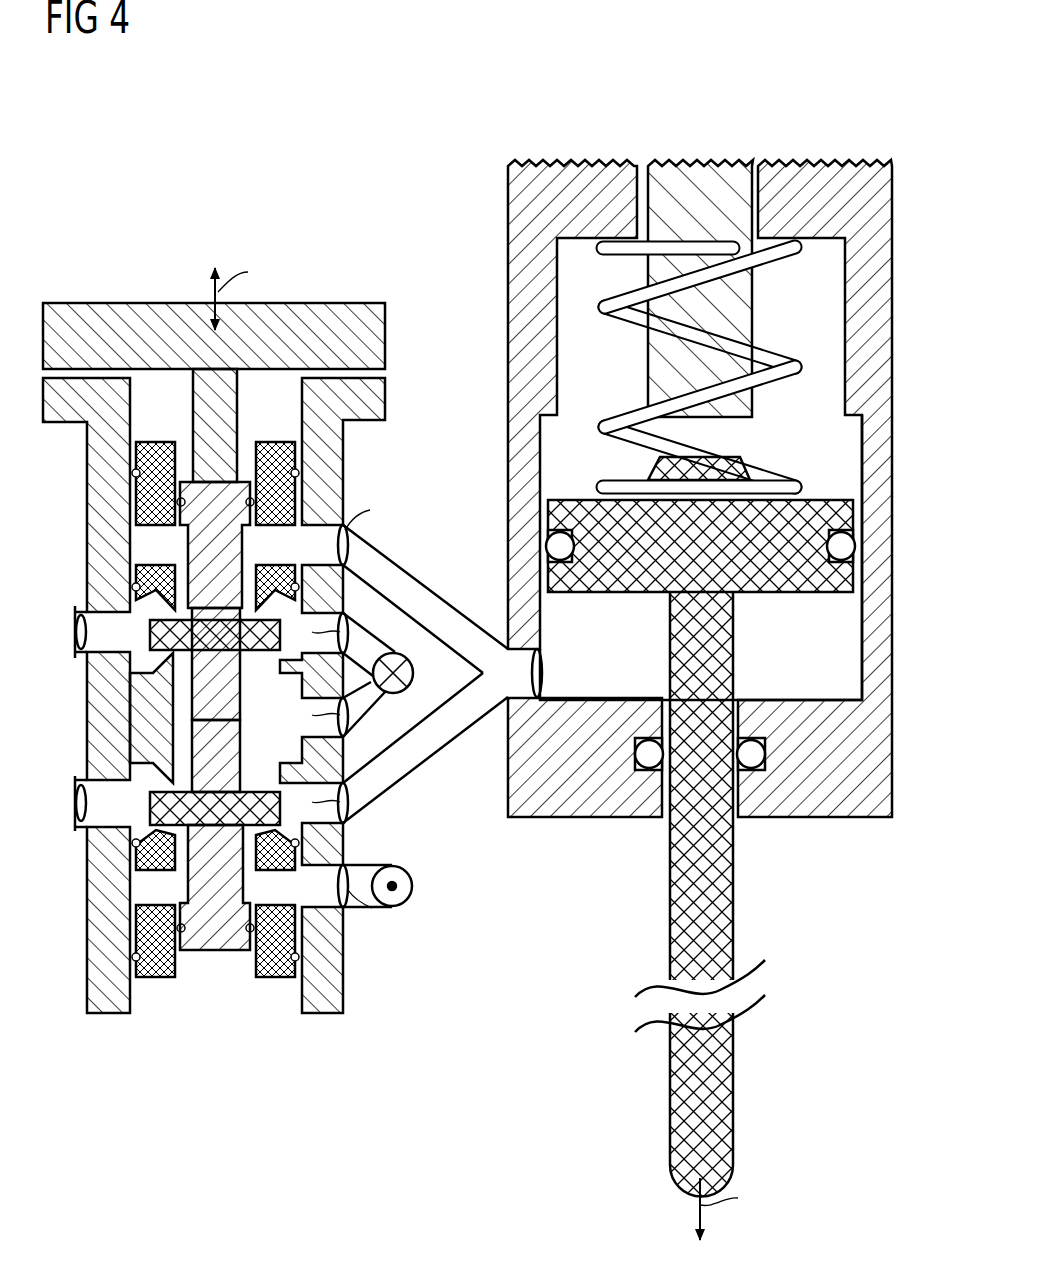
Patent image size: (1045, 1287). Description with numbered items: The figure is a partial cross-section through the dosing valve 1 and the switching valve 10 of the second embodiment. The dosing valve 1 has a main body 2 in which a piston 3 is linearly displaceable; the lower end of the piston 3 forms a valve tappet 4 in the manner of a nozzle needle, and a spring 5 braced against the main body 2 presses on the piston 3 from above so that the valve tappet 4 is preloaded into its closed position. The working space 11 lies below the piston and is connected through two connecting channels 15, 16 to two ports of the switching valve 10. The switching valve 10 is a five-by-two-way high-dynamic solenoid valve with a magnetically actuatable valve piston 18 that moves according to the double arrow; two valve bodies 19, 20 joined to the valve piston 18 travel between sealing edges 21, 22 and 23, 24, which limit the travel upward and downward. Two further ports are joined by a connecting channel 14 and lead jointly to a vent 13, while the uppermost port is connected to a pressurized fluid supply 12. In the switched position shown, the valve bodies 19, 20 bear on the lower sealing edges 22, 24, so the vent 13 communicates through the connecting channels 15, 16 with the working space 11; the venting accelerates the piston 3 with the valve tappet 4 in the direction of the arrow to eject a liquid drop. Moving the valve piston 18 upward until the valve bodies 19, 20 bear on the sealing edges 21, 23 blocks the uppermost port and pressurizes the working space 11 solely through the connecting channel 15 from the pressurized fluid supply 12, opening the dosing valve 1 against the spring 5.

The dosing valve 1 is at (808, 130).
The main body 2 is at (893, 680).
The piston 3 is at (733, 930).
The valve tappet 4 is at (733, 1085).
The spring 5 is at (793, 366).
The switching valve 10 is at (120, 281).
The working space 11 is at (862, 625).
The pressurized fluid supply 12 is at (413, 885).
The vent 13 is at (405, 665).
The connecting channel 14 is at (355, 628).
The connecting channel 15 is at (455, 722).
The connecting channel 16 is at (455, 628).
The valve piston 18 is at (238, 405).
The valve body 19 is at (148, 632).
The valve body 20 is at (150, 810).
The sealing edge 21 is at (187, 605).
The sealing edge 22 is at (180, 657).
The sealing edge 23 is at (177, 778).
The sealing edge 24 is at (185, 833).